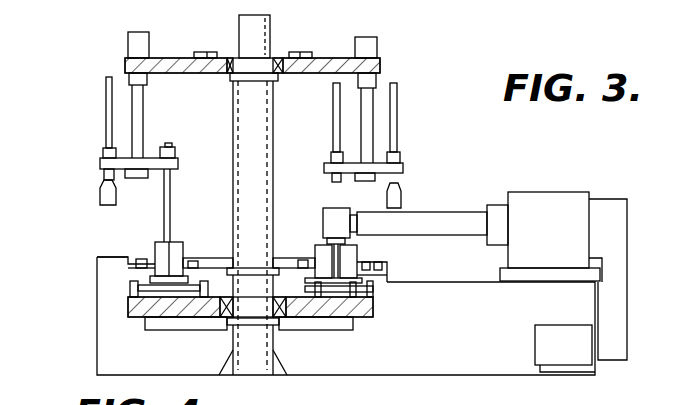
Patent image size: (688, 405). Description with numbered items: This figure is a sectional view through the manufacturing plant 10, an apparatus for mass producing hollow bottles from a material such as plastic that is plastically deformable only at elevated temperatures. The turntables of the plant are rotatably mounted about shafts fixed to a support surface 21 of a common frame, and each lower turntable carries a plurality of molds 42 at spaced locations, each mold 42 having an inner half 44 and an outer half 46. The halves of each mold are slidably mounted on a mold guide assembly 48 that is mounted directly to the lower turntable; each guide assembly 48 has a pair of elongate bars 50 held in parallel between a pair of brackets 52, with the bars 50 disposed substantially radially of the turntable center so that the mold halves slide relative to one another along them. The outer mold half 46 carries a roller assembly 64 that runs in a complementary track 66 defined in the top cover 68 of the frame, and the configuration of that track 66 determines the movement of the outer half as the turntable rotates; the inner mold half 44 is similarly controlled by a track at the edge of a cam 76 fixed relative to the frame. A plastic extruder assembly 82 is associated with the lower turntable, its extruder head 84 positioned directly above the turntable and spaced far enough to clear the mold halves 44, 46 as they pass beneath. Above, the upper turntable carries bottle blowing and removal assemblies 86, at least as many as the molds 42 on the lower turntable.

The manufacturing plant 10 is at (435, 122).
The support surface 21 is at (452, 372).
The mold 42 is at (182, 243).
The inner mold half 44 is at (315, 248).
The outer mold half 46 is at (358, 252).
The mold guide assembly 48 is at (374, 291).
The elongate bars 50 is at (340, 297).
The brackets 52 is at (295, 296).
The roller assembly 64 is at (141, 259).
The track 66 is at (128, 283).
The top cover 68 is at (108, 257).
The cam 76 is at (223, 258).
The plastic extruder assembly 82 is at (467, 210).
The extruder head 84 is at (326, 208).
The bottle blowing and removal assembly 86 is at (89, 136).